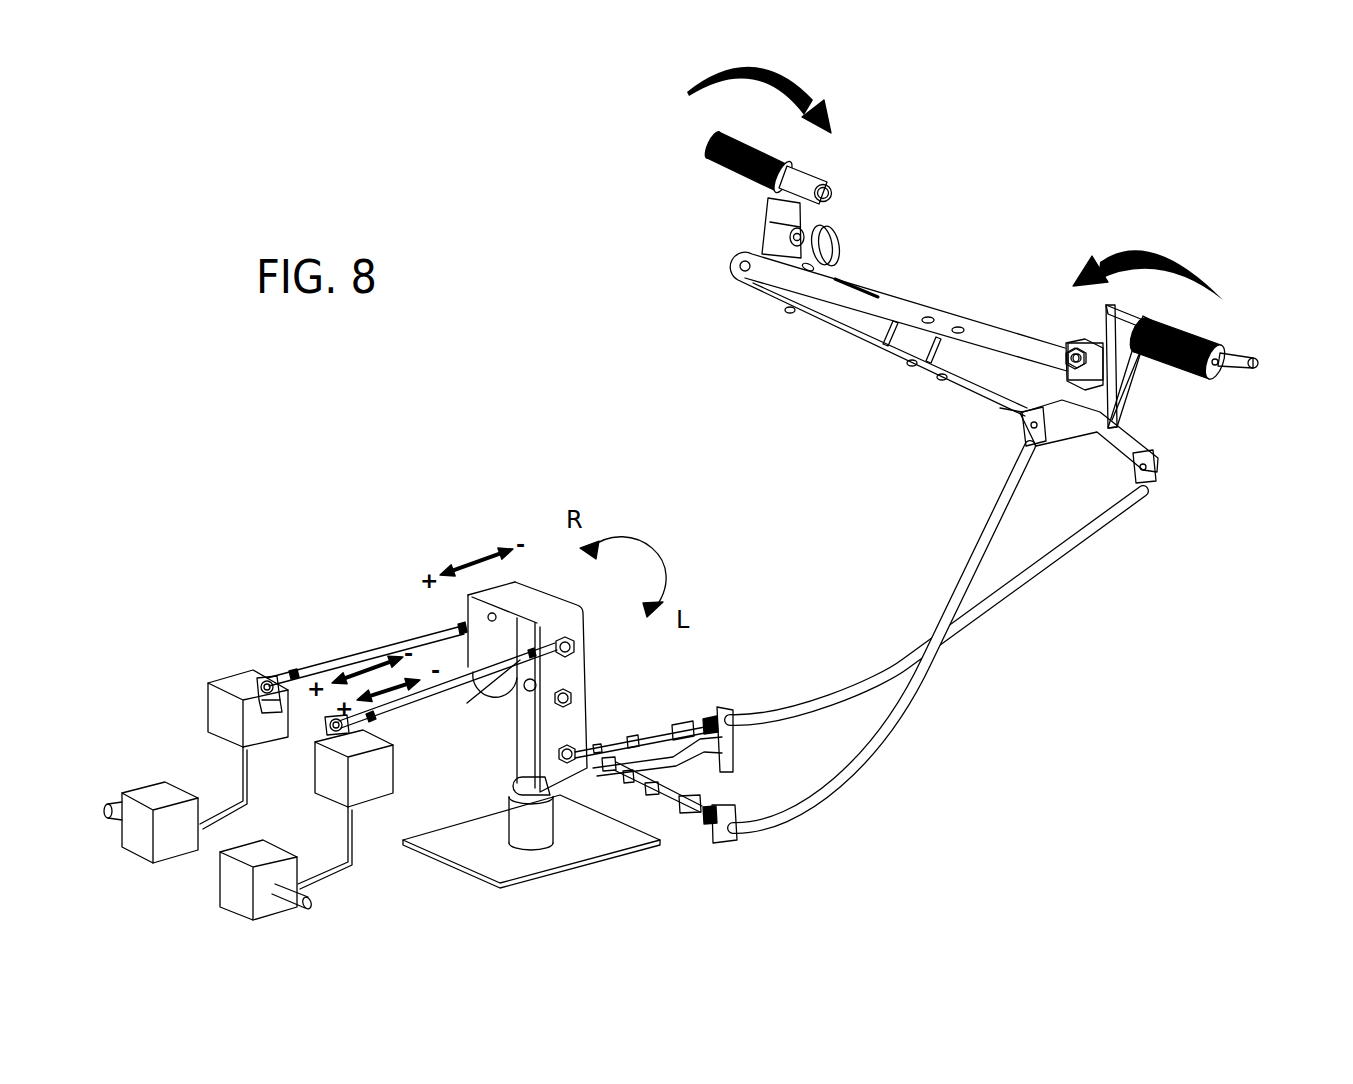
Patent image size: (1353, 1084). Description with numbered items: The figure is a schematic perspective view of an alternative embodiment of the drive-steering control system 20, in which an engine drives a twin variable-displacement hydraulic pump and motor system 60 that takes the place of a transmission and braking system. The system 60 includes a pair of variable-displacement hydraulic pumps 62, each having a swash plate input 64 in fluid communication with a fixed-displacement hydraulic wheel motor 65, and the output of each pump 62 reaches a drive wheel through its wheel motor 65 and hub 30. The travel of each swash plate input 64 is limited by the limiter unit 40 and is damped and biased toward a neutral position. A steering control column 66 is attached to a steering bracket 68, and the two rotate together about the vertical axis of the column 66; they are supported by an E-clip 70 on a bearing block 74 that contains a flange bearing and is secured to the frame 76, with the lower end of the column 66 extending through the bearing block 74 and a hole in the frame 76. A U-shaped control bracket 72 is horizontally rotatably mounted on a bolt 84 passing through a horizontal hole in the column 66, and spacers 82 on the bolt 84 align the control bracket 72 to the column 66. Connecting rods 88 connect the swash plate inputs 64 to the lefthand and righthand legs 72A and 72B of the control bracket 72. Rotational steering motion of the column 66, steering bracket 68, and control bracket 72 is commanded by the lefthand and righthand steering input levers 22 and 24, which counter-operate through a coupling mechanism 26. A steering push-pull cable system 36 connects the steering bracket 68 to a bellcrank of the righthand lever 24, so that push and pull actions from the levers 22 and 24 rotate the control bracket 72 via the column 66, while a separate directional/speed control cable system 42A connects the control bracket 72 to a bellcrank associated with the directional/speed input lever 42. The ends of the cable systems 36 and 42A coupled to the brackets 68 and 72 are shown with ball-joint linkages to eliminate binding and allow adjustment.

The drive-steering control system 20 is at (1022, 192).
The lefthand steering input lever 22 is at (757, 143).
The righthand steering input lever 24 is at (1207, 338).
The coupling mechanism 26 is at (875, 318).
The hub 30 is at (290, 906).
The steering push-pull cable system 36 is at (980, 531).
The limiter unit 40 is at (1073, 342).
The directional/speed input lever 42 is at (1259, 358).
The directional/speed control cable system 42A is at (1030, 572).
The twin variable-displacement hydraulic pump and motor system 60 is at (322, 539).
The variable-displacement hydraulic pump 62 is at (217, 728).
The swash plate input 64 is at (267, 678).
The fixed-displacement hydraulic wheel motor 65 is at (135, 793).
The steering control column 66 is at (523, 738).
The steering bracket 68 is at (735, 747).
The E-clip 70 is at (508, 793).
The U-shaped control bracket 72 is at (502, 674).
The lefthand leg 72A is at (478, 635).
The righthand leg 72B is at (578, 673).
The bearing block 74 is at (545, 822).
The frame 76 is at (556, 868).
The spacers 82 is at (527, 687).
The bolt 84 is at (573, 696).
The connecting rods 88 is at (343, 652).